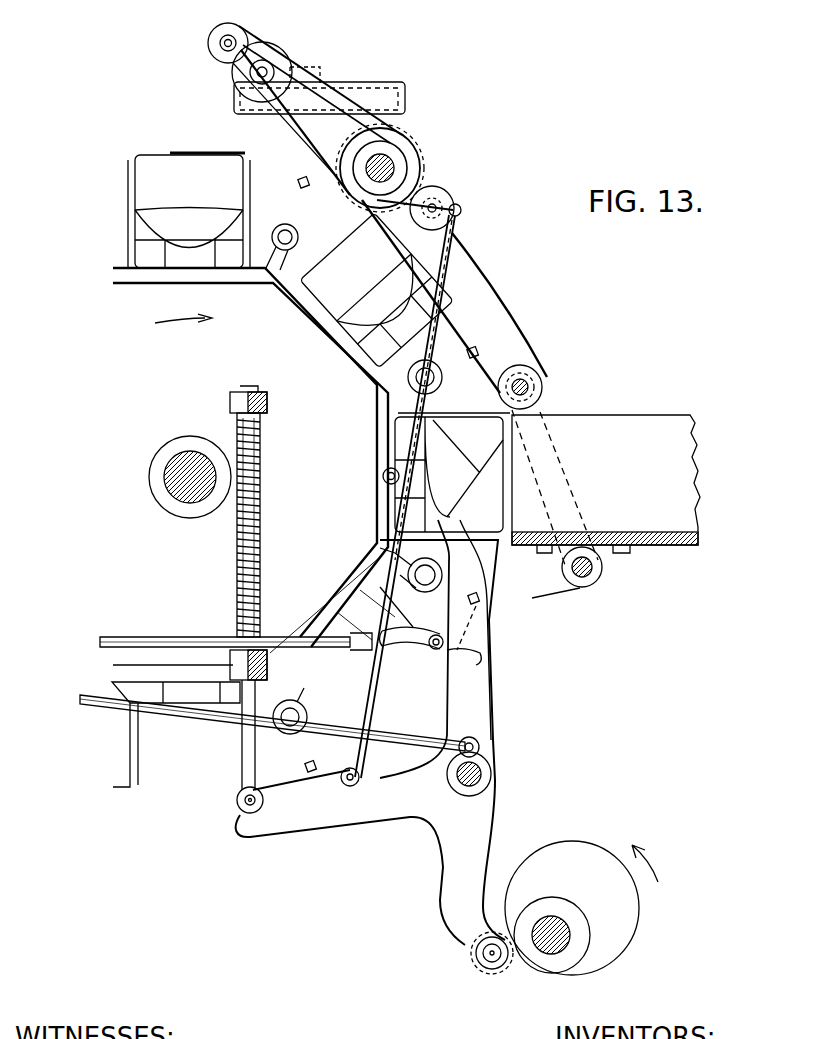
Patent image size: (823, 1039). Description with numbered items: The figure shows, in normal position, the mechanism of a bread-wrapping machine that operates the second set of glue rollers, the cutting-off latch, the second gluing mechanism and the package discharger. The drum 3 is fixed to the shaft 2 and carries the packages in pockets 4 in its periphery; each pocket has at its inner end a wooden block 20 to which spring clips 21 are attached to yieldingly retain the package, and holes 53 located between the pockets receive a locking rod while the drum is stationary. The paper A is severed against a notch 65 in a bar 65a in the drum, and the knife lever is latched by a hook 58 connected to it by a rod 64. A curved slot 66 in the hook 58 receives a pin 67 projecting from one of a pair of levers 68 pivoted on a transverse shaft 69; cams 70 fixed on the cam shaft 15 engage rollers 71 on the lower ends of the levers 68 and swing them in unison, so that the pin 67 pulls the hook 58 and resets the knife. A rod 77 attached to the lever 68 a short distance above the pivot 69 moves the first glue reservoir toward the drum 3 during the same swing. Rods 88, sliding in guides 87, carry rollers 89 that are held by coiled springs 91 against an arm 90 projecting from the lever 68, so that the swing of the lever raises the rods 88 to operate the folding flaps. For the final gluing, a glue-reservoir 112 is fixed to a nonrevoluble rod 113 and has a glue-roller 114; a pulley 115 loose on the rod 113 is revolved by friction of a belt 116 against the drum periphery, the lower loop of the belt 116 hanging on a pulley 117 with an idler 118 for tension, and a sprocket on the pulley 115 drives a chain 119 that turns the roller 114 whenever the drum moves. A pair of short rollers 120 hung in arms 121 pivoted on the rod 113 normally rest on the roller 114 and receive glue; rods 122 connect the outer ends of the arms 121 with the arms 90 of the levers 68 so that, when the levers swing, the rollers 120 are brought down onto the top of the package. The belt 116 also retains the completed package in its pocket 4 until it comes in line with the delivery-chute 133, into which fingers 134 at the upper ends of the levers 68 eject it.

The paper A is at (158, 158).
The shaft 2 is at (170, 478).
The drum 3 is at (196, 308).
The pockets 4 is at (294, 228).
The transverse shaft 15 is at (556, 950).
The block 20 is at (345, 620).
The spring clips 21 is at (165, 212).
The holes 53 is at (444, 379).
The hook 58 is at (483, 652).
The rod 64 is at (182, 646).
The notch 65 is at (479, 354).
The bar 65a is at (309, 190).
The curved slot 66 is at (408, 655).
The pin 67 is at (436, 652).
The levers 68 is at (467, 705).
The transverse shaft 69 is at (483, 774).
The cams 70 is at (581, 908).
The rollers 71 is at (474, 966).
The rod 77 is at (418, 740).
The guides 87 is at (268, 402).
The rods 88 is at (262, 508).
The rollers 89 is at (237, 807).
The arm 90 is at (350, 856).
The coiled springs 91 is at (262, 535).
The glue-reservoir 112 is at (398, 90).
The nonrevoluble rod 113 is at (393, 165).
The glue-roller 114 is at (250, 72).
The pulley 115 is at (405, 148).
The belt 116 is at (490, 300).
The pulley 117 is at (543, 385).
The idler 118 is at (452, 226).
The chain 119 is at (292, 146).
The short rollers 120 is at (218, 38).
The arms 121 is at (330, 80).
The rods 122 is at (390, 540).
The delivery-chute 133 is at (606, 504).
The fingers 134 is at (383, 470).